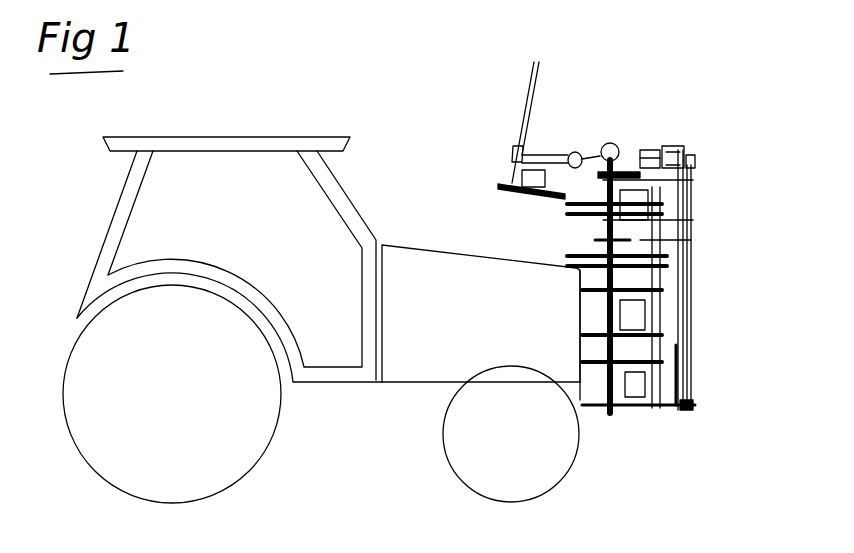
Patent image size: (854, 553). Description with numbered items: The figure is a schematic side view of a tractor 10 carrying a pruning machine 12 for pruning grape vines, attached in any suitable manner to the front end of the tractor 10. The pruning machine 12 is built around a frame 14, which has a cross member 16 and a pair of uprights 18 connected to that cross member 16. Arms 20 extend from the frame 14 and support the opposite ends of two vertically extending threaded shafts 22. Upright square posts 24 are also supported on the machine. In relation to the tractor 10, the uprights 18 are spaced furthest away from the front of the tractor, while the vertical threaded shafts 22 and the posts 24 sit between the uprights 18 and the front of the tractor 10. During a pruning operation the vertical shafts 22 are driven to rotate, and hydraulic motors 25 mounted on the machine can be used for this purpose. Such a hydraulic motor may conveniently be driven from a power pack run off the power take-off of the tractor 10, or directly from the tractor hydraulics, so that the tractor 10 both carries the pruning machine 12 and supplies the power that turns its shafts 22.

The tractor 10 is at (283, 137).
The pruning machine 12 is at (650, 112).
The frame 14 is at (700, 218).
The cross member 16 is at (697, 173).
The uprights 18 is at (691, 273).
The arms 20 is at (691, 240).
The threaded shafts 22 is at (597, 222).
The upright square posts 24 is at (691, 290).
The hydraulic motors 25 is at (607, 143).